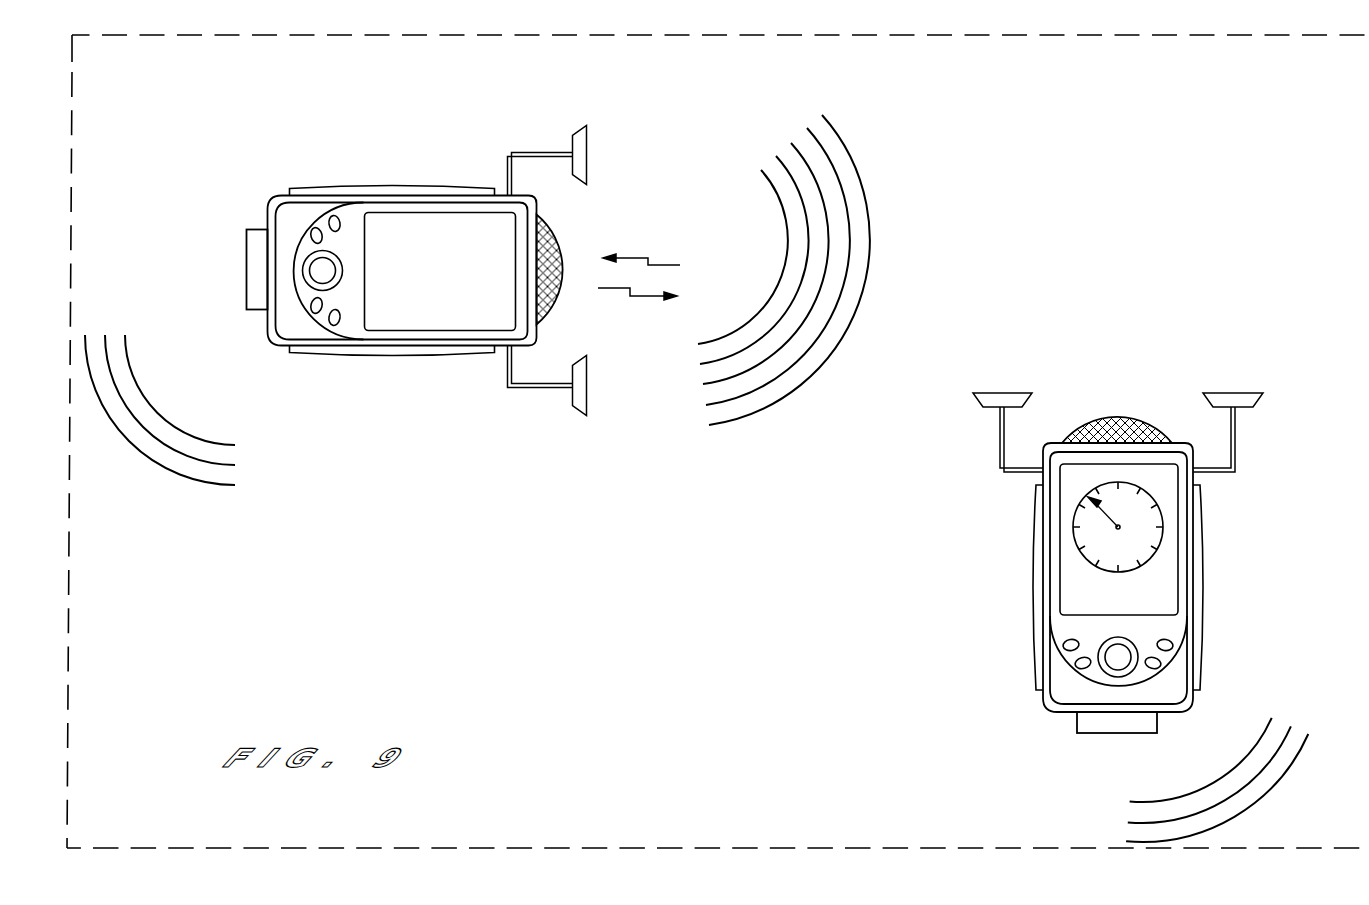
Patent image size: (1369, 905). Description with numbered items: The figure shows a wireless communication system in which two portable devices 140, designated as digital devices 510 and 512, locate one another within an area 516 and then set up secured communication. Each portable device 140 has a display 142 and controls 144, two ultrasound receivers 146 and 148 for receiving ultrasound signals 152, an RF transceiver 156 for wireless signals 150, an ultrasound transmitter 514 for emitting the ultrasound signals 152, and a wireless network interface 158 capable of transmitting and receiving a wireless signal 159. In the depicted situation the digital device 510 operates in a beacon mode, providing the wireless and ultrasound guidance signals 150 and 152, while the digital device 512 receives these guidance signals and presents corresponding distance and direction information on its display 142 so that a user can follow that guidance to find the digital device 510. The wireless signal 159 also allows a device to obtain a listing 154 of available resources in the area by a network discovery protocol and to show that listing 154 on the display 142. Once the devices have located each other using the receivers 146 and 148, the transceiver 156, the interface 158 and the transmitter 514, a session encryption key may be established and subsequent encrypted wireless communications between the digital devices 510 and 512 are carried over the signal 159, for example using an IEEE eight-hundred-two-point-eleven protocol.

The portable device 140 is at (430, 352).
The display 142 is at (390, 322).
The controls 144 is at (315, 313).
The ultrasound receiver 146 is at (590, 152).
The ultrasound receiver 148 is at (577, 414).
The wireless guidance signals 150 is at (668, 265).
The ultrasound guidance signals 152 is at (787, 247).
The listing of available resources 154 is at (357, 187).
The RF transceiver 156 is at (540, 338).
The wireless network interface 158 is at (248, 270).
The wireless signal 159 is at (153, 460).
The digital device 510 is at (362, 128).
The digital device 512 is at (983, 617).
The ultrasound transmitter 514 is at (563, 245).
The area 516 is at (1212, 115).